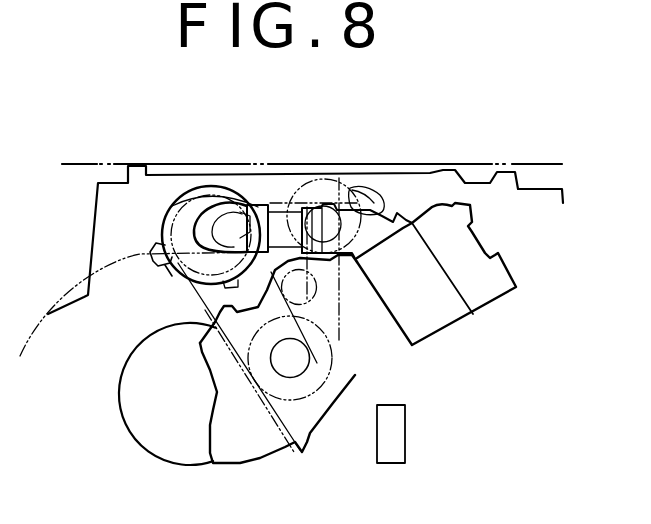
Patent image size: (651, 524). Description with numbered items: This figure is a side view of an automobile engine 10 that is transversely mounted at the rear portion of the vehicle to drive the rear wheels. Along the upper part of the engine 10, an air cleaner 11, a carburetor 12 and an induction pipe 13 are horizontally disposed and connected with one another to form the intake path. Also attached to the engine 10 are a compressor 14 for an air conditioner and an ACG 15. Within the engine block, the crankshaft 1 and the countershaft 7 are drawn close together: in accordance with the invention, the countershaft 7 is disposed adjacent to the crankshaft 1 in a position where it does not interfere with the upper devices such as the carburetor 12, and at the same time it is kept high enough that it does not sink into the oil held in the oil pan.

The crankshaft 1 is at (295, 366).
The countershaft 7 is at (318, 289).
The engine 10 is at (457, 320).
The air cleaner 11 is at (211, 188).
The carburetor 12 is at (307, 207).
The induction pipe 13 is at (360, 196).
The compressor for an air conditioner 14 is at (152, 243).
The ACG 15 is at (350, 188).